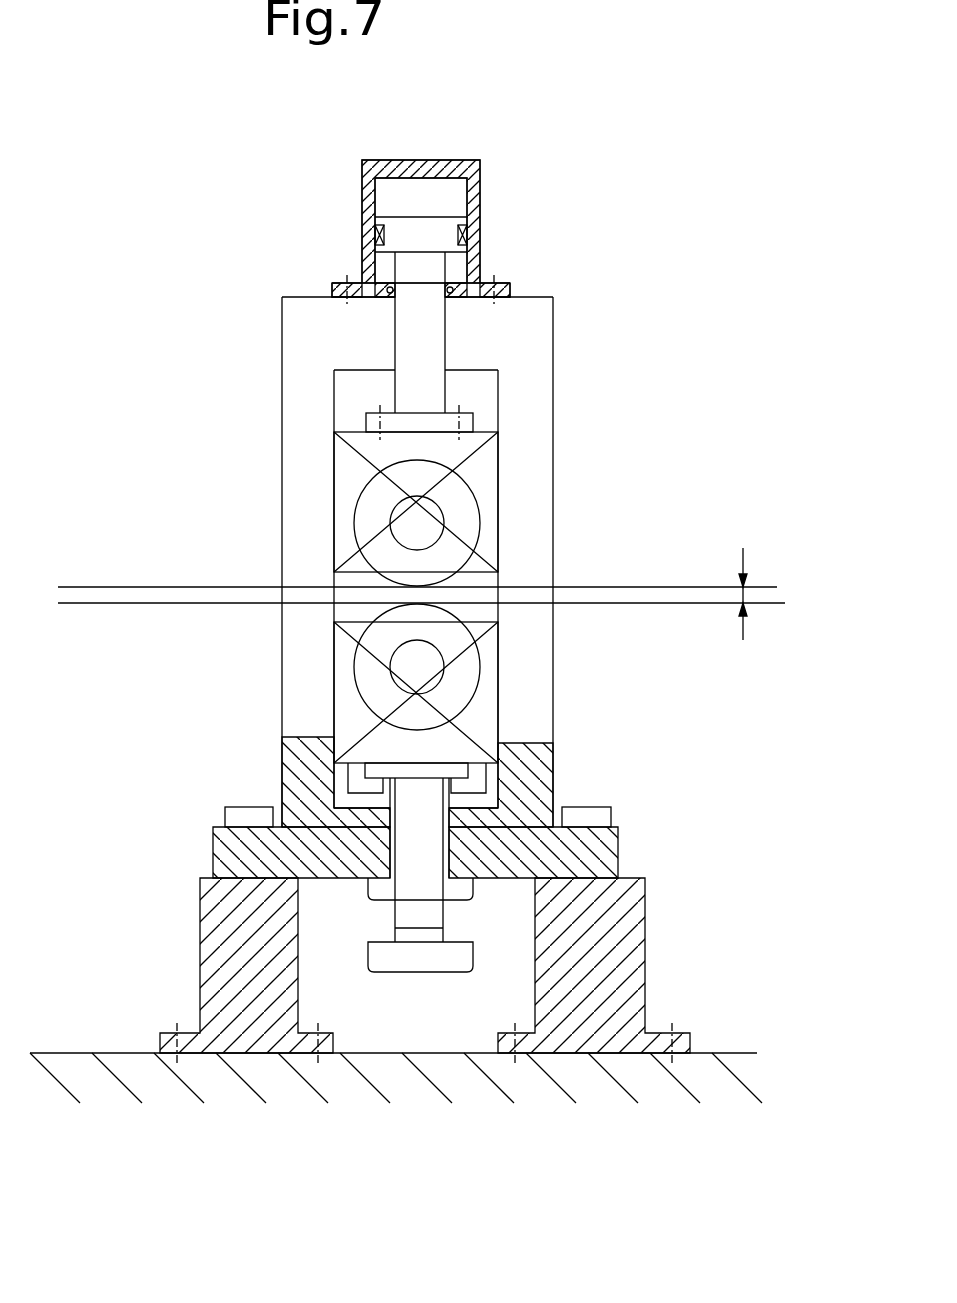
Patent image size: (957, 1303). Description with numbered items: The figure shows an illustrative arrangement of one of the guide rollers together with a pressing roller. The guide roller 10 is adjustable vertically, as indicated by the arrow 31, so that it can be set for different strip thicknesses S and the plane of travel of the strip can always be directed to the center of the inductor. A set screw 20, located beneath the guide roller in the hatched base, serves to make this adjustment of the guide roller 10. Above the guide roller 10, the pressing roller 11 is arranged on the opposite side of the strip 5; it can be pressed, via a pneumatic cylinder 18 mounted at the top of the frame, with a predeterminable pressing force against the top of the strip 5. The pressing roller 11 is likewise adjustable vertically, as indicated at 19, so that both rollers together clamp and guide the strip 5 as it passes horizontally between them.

The pneumatic cylinder 18 is at (438, 193).
The pressing roller 11 is at (455, 488).
The vertical adjustment indication 19 is at (485, 485).
The strip 5 is at (143, 590).
The strip thickness S is at (743, 598).
The guide roller 10 is at (462, 683).
The arrow 31 is at (349, 712).
The set screw 20 is at (422, 963).